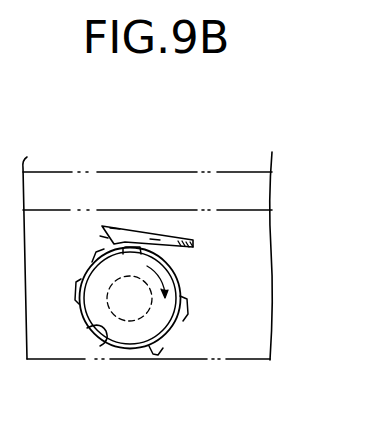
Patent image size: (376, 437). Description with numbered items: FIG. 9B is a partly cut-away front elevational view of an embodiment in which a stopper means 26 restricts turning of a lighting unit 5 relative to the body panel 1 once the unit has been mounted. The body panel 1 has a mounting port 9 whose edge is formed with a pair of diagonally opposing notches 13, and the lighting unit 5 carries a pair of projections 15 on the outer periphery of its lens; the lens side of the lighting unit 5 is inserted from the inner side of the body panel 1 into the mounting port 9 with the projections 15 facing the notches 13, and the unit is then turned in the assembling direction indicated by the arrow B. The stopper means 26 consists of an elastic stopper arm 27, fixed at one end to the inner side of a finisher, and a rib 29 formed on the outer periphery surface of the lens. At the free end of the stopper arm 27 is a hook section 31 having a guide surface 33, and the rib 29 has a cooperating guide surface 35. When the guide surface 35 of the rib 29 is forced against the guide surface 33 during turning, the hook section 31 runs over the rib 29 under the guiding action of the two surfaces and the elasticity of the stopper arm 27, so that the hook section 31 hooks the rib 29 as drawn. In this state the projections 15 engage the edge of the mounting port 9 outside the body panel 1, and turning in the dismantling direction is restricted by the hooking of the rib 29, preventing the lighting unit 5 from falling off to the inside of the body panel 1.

The body panel 1 is at (78, 353).
The lighting unit 5 is at (188, 283).
The mounting port 9 is at (104, 347).
The notches 13 is at (78, 288).
The projections 15 is at (98, 250).
The stopper means 26 is at (150, 222).
The stopper arm 27 is at (128, 227).
The rib 29 is at (150, 250).
The hook section 31 is at (115, 226).
The guide surface 33 is at (104, 236).
The guide surface 35 is at (167, 232).